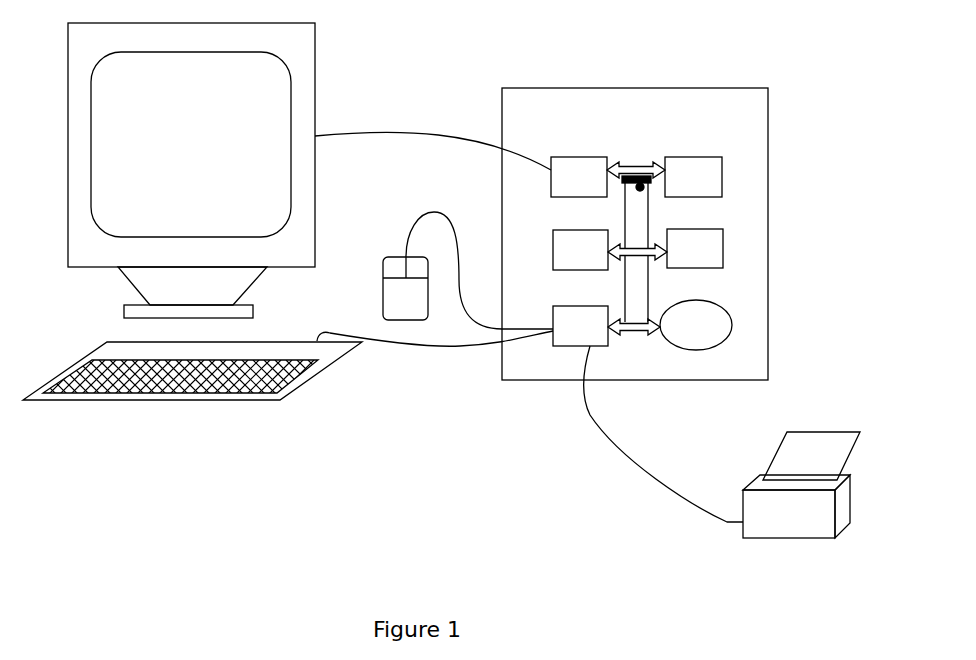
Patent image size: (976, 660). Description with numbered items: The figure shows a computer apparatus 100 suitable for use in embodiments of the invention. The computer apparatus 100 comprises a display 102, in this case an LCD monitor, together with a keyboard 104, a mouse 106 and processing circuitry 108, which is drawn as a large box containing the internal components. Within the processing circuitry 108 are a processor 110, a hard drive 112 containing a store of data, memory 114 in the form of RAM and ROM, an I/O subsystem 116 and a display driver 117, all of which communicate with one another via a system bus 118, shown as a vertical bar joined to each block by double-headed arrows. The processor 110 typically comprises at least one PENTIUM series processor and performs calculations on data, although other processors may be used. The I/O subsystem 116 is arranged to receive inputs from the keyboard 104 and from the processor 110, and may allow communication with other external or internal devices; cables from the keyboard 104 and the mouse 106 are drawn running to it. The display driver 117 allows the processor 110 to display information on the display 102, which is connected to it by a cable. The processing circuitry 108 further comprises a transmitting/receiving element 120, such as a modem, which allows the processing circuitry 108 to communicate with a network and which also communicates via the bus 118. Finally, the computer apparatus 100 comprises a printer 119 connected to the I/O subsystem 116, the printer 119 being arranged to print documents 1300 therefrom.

The computer apparatus 100 is at (668, 42).
The display 102 is at (165, 154).
The keyboard 104 is at (270, 398).
The mouse 106 is at (383, 257).
The processing circuitry 108 is at (792, 116).
The processor 110 is at (562, 262).
The hard drive 112 is at (677, 260).
The memory 114 is at (675, 189).
The I/O subsystem 116 is at (562, 338).
The display driver 117 is at (561, 189).
The system bus 118 is at (650, 220).
The printer 119 is at (772, 525).
The transmitting/receiving element 120 is at (678, 336).
The documents 1300 is at (788, 467).